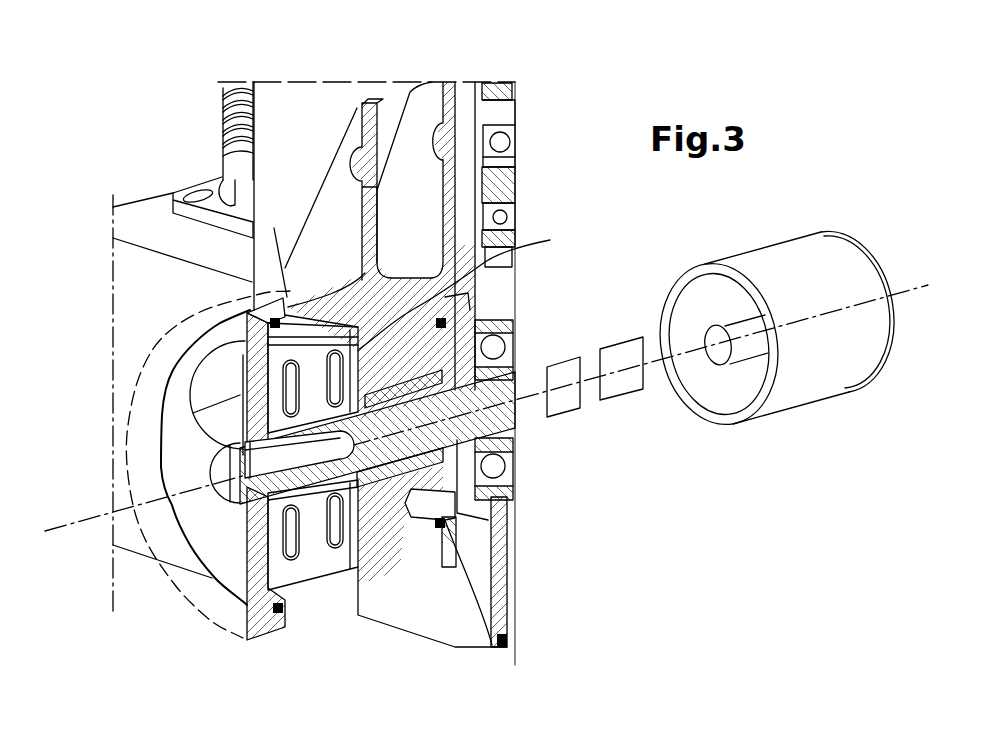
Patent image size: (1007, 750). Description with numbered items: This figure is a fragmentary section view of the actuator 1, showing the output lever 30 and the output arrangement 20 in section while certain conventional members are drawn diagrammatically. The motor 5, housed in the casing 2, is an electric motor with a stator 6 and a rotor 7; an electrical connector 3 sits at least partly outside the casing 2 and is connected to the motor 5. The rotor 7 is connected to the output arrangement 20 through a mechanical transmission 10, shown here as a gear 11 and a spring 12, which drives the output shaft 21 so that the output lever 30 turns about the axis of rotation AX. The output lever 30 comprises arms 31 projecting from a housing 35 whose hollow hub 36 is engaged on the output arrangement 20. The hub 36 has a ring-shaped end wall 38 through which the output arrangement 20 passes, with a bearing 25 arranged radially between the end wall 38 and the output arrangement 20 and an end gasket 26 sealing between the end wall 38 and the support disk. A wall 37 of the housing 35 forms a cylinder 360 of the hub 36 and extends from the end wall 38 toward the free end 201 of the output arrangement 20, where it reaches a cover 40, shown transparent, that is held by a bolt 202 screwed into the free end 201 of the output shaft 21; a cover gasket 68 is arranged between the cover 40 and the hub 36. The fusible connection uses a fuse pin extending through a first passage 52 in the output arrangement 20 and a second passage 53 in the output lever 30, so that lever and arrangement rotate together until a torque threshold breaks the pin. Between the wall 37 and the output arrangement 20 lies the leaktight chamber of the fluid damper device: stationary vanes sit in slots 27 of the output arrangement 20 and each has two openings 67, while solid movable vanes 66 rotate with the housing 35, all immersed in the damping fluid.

The actuator 1 is at (150, 96).
The casing 2 is at (287, 107).
The electrical connector 3 is at (223, 110).
The motor 5 is at (861, 233).
The stator 6 is at (802, 393).
The rotor 7 is at (738, 360).
The mechanical transmission 10 is at (594, 455).
The gear 11 is at (617, 400).
The spring 12 is at (560, 420).
The output arrangement 20 is at (502, 392).
The output shaft 21 is at (362, 438).
The bearing 25 is at (427, 347).
The end gasket 26 is at (497, 590).
The slot 27 is at (220, 427).
The output lever 30 is at (282, 270).
The arm 31 is at (348, 117).
The housing 35 is at (407, 557).
The hollow hub 36 is at (368, 593).
The wall 37 is at (207, 345).
The end wall 38 is at (471, 216).
The cover 40 is at (198, 590).
The first passage 52 is at (462, 535).
The second passage 53 is at (417, 520).
The movable vane 66 is at (265, 262).
The opening 67 is at (342, 398).
The cover gasket 68 is at (216, 342).
The free end 201 is at (300, 482).
The bolt 202 is at (198, 527).
The cylinder 360 is at (312, 600).
The axis of rotation AX is at (70, 522).